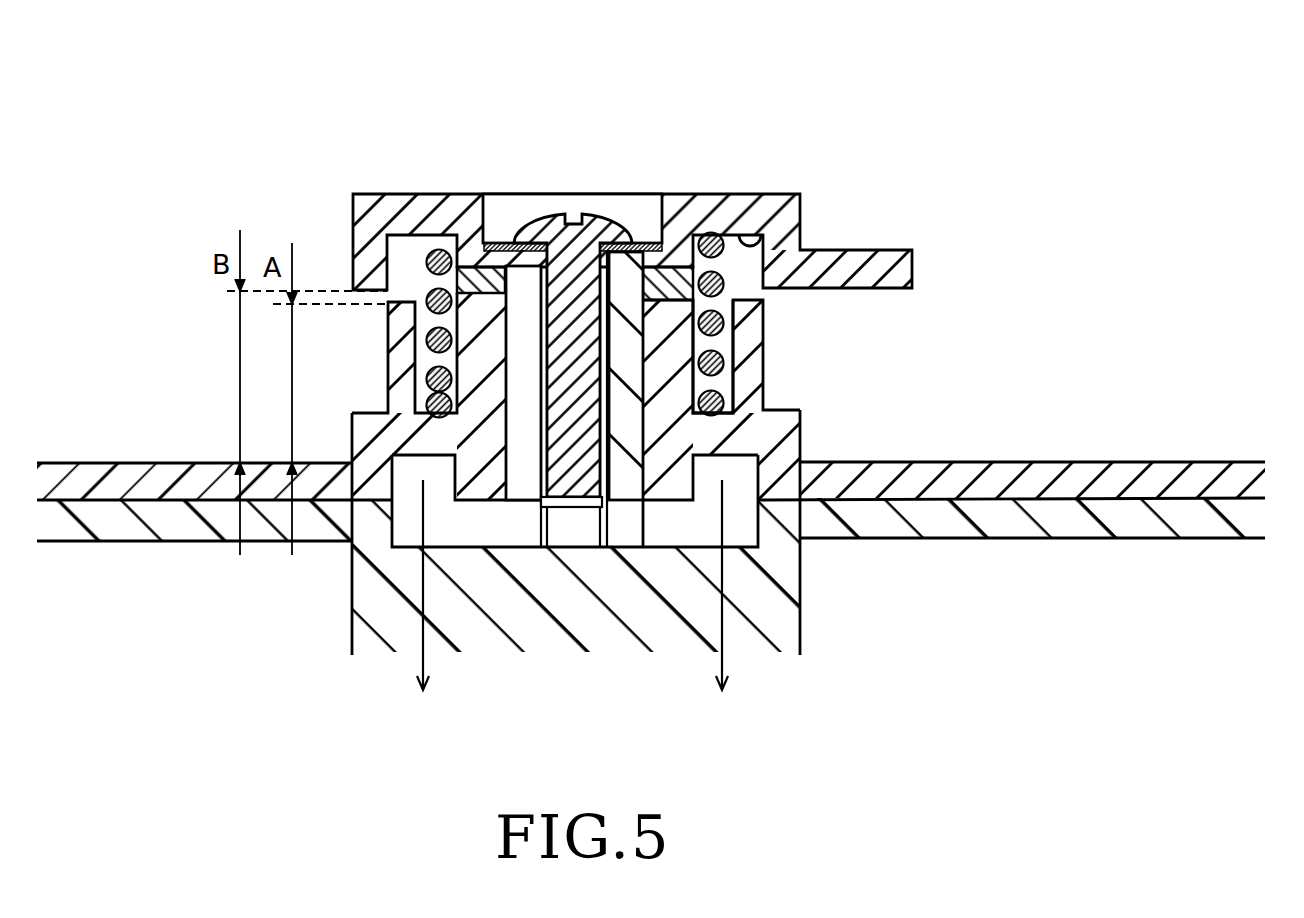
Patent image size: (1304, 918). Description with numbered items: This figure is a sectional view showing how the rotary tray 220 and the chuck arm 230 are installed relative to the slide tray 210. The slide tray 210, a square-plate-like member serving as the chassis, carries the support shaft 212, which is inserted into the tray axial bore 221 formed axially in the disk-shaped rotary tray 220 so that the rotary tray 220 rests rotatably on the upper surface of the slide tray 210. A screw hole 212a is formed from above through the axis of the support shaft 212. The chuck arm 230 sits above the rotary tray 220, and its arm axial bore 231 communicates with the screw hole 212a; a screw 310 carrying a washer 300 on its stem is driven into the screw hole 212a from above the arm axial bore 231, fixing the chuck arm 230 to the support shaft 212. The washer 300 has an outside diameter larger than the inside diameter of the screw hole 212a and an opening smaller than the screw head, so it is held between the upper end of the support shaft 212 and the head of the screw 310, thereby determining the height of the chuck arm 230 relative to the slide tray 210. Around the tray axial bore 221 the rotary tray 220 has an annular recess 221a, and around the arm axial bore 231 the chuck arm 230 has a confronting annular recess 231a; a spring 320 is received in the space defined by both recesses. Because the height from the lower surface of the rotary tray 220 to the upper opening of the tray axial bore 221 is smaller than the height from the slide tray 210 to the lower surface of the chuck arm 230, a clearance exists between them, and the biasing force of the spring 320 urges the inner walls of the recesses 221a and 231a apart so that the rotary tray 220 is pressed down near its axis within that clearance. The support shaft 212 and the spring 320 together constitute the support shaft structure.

The slide tray 210 is at (1027, 538).
The rotary tray 220 is at (1010, 462).
The tray axial bore 221 is at (630, 425).
The annular recess 221a is at (700, 387).
The chuck arm 230 is at (890, 250).
The arm axial bore 231 is at (538, 325).
The annular recess 231a is at (740, 244).
The washer 300 is at (647, 243).
The screw 310 is at (558, 214).
The spring 320 is at (723, 284).
The support shaft 212 is at (660, 272).
The screw hole 212a is at (518, 243).